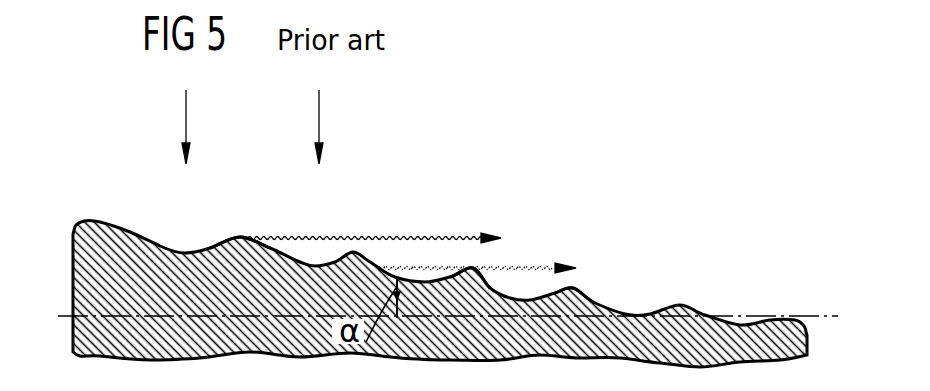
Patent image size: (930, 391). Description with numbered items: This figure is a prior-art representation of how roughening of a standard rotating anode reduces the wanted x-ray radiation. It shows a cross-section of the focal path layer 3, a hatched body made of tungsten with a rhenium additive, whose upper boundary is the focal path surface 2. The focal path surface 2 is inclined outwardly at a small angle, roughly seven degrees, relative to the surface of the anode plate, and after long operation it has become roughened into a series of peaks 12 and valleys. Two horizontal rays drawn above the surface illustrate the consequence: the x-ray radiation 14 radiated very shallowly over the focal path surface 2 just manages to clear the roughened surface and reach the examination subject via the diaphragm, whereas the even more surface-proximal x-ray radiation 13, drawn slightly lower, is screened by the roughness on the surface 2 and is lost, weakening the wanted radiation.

The focal path surface 2 is at (160, 249).
The focal path layer 3 is at (73, 297).
The roughness peaks 12 is at (243, 238).
The surface-proximal x-ray radiation 13 is at (521, 266).
The x-ray radiation 14 is at (423, 236).